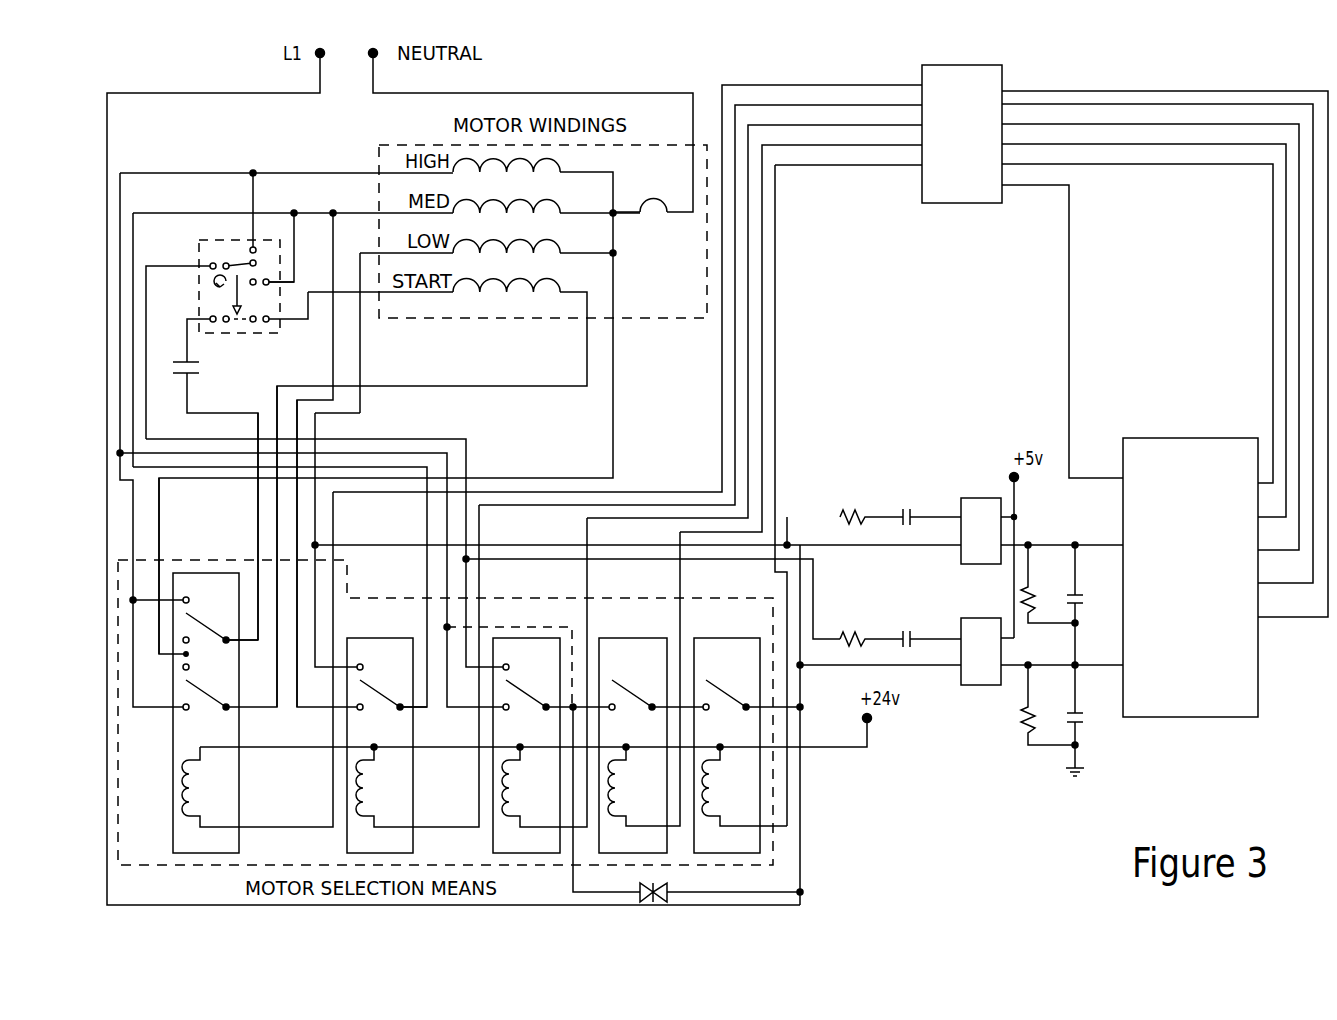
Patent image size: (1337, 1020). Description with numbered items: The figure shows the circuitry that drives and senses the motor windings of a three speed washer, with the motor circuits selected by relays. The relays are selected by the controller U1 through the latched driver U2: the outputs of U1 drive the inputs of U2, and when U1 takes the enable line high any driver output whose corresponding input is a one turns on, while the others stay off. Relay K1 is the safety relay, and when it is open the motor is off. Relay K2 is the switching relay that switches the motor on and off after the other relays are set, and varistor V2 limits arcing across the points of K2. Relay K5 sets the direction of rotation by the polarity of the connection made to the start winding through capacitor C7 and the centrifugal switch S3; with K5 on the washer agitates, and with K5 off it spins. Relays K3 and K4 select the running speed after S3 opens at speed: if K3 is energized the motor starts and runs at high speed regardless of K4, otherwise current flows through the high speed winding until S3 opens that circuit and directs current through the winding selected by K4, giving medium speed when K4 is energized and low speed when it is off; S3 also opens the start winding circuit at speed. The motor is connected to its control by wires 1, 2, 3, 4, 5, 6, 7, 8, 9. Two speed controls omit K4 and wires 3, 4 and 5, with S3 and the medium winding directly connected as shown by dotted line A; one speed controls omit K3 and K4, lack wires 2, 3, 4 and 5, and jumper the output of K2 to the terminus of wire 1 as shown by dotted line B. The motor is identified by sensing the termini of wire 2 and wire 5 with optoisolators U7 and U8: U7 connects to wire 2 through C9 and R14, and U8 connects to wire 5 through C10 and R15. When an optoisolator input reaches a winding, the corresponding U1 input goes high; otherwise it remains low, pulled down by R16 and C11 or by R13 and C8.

The dotted line A is at (313, 447).
The dotted line B is at (543, 749).
The centrifugal switch S3 is at (227, 306).
The capacitor C7 is at (208, 488).
The wire 1 is at (313, 580).
The wire 2 is at (493, 553).
The wire 3 is at (272, 578).
The wire 4 is at (290, 553).
The wire 5 is at (631, 659).
The wire 6 is at (251, 546).
The wire 7 is at (251, 526).
The wire 8 is at (153, 566).
The wire 9 is at (153, 440).
The safety relay K1 is at (748, 745).
The switching relay K2 is at (652, 692).
The relay K3 is at (552, 685).
The relay K4 is at (413, 679).
The relay K5 is at (253, 672).
The varistor V2 is at (721, 886).
The controller U1 is at (1190, 561).
The latched driver U2 is at (1125, 327).
The optoisolator U7 is at (960, 639).
The optoisolator U8 is at (1042, 518).
The resistor R13 is at (1048, 584).
The resistor R14 is at (871, 630).
The resistor R15 is at (871, 508).
The resistor R16 is at (1048, 705).
The capacitor C8 is at (1086, 605).
The capacitor C9 is at (932, 630).
The capacitor C10 is at (932, 509).
The capacitor C11 is at (1088, 720).